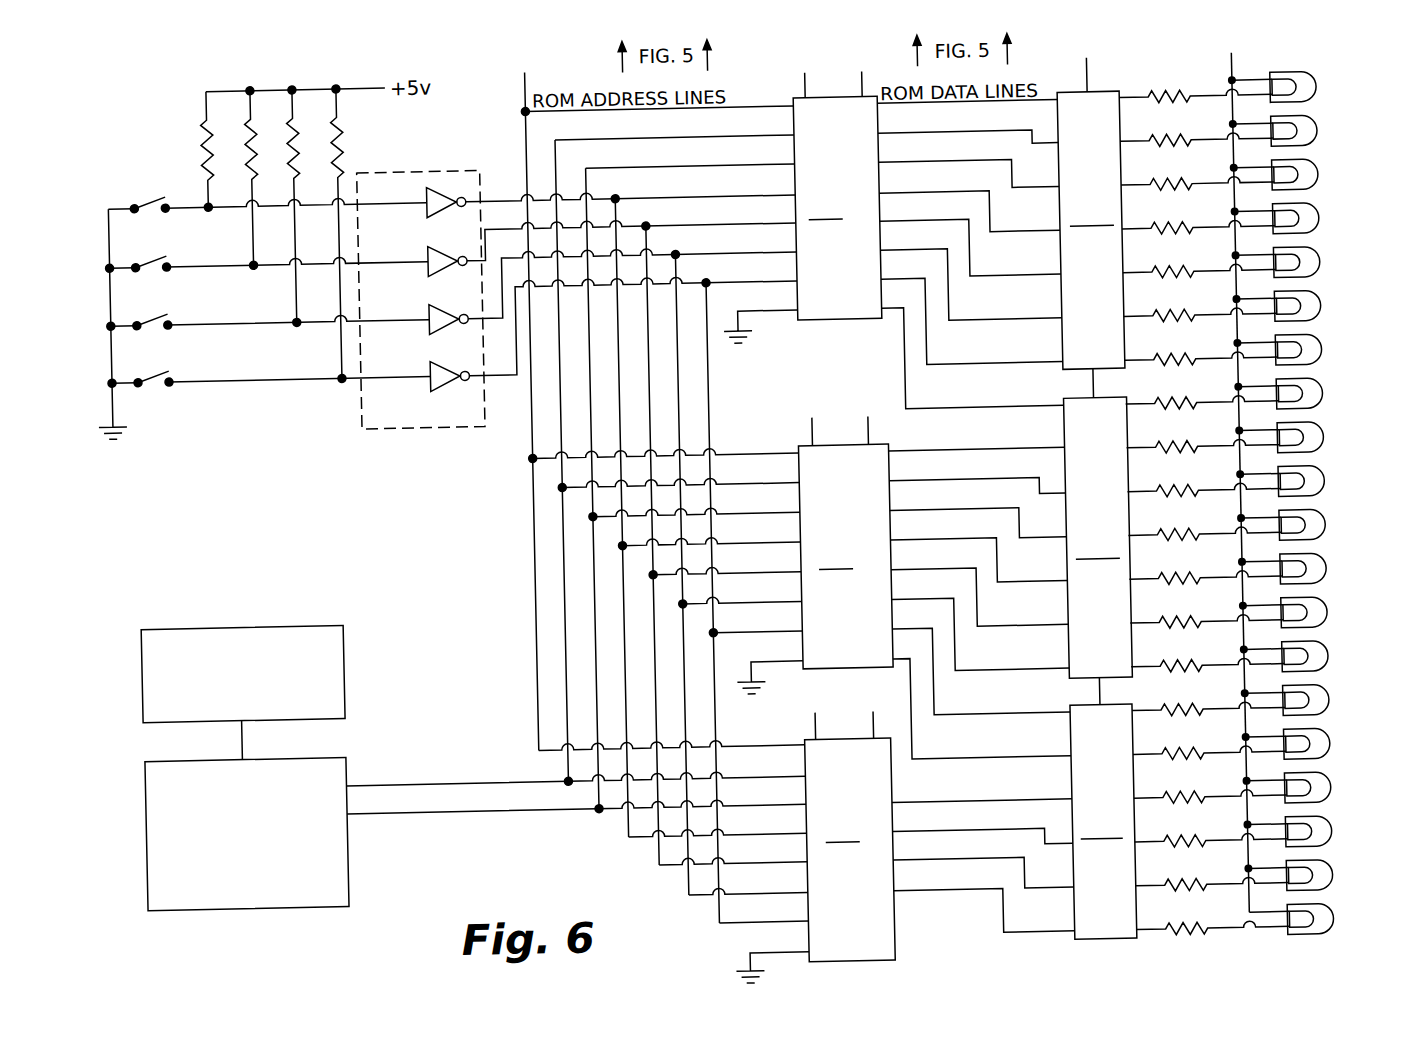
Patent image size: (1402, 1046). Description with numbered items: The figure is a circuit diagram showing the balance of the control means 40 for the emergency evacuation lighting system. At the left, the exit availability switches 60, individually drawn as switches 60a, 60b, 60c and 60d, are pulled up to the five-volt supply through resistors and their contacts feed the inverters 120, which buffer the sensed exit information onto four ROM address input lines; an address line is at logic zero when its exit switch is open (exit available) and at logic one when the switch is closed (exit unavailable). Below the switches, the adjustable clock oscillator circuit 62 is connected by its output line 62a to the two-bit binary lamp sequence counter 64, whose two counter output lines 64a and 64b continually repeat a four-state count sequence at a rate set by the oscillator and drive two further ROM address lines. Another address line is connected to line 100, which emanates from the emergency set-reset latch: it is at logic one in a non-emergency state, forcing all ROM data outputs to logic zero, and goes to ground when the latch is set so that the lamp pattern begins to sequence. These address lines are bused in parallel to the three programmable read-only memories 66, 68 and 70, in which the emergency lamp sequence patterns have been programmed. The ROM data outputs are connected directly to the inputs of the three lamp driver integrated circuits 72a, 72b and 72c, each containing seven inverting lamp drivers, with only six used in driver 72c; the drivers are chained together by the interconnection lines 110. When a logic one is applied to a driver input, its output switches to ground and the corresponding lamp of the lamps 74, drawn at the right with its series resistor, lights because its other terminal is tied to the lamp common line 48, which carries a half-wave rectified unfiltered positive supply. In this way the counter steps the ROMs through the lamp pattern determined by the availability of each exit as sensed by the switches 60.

The control means 40 is at (147, 551).
The lamp common line 48 is at (1243, 68).
The exit availability switches 60 is at (89, 317).
The exit availability switch 60a is at (172, 201).
The exit availability switch 60b is at (172, 260).
The exit availability switch 60c is at (172, 318).
The exit availability switch 60d is at (172, 375).
The clock oscillator circuit 62 is at (270, 618).
The clock output line 62a is at (239, 731).
The lamp sequence counter 64 is at (269, 899).
The counter output line 64a is at (420, 778).
The counter output line 64b is at (429, 808).
The lamp sequence read-only memory 66 is at (676, 209).
The lamp sequence read-only memory 68 is at (710, 542).
The lamp sequence read-only memory 70 is at (719, 834).
The lamp driver integrated circuit 72a is at (1001, 232).
The lamp driver integrated circuit 72b is at (1007, 492).
The lamp driver integrated circuit 72c is at (1012, 783).
The lamps 74 is at (1320, 437).
The line from emergency set-reset latch 100 is at (534, 88).
The driver interconnection line 110 is at (1097, 73).
The inverters 120 is at (415, 166).